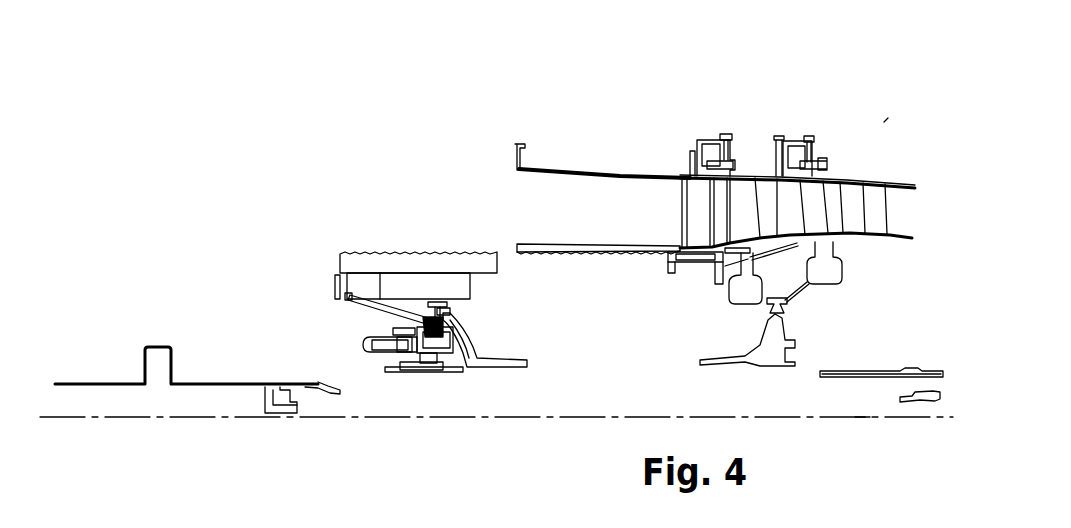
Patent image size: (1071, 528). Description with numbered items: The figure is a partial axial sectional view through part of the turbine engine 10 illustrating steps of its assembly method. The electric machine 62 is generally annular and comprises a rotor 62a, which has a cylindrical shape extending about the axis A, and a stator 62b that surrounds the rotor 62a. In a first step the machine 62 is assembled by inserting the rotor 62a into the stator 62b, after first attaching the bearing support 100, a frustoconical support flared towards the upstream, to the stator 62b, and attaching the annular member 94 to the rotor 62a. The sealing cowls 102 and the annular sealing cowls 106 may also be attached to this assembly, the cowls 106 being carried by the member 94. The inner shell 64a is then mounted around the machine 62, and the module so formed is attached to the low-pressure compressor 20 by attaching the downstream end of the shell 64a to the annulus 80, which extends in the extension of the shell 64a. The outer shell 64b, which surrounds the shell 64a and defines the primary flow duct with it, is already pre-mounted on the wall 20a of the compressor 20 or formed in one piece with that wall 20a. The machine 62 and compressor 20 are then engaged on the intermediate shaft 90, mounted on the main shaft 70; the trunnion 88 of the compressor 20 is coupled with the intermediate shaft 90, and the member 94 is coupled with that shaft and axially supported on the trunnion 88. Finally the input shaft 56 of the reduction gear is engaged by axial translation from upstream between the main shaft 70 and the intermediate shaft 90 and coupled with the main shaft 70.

The turbine engine 10 is at (886, 120).
The low-pressure compressor 20 is at (907, 213).
The wall 20a is at (852, 178).
The input shaft 56 is at (120, 383).
The electric machine 62 is at (395, 218).
The rotor 62a is at (460, 289).
The stator 62b is at (435, 252).
The inner shell 64a is at (622, 247).
The outer shell 64b is at (618, 175).
The main shaft 70 is at (934, 399).
The annulus 80 is at (702, 263).
The trunnion 88 is at (778, 315).
The intermediate shaft 90 is at (882, 370).
The annular member 94 is at (493, 367).
The bearing support 100 is at (363, 324).
The sealing cowls 102 is at (398, 297).
The annular sealing cowls 106 is at (463, 373).
The axis A is at (863, 420).